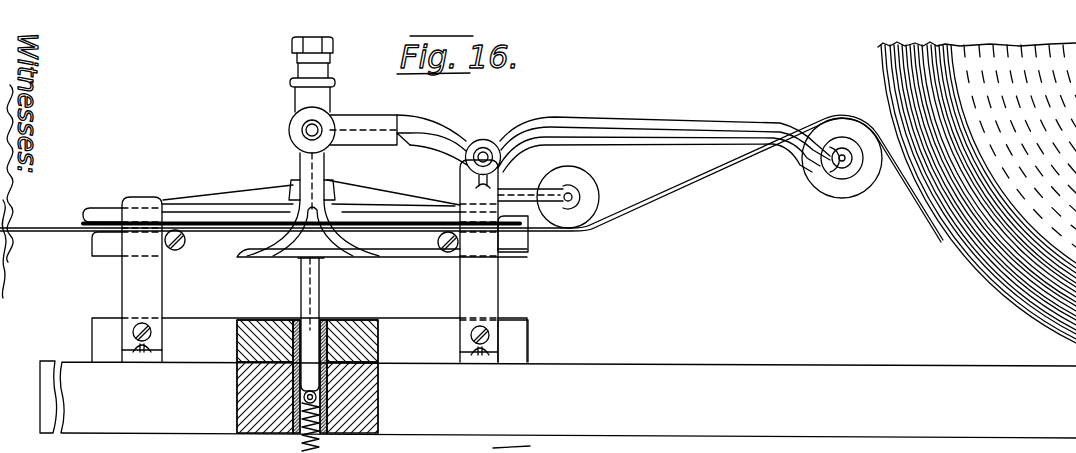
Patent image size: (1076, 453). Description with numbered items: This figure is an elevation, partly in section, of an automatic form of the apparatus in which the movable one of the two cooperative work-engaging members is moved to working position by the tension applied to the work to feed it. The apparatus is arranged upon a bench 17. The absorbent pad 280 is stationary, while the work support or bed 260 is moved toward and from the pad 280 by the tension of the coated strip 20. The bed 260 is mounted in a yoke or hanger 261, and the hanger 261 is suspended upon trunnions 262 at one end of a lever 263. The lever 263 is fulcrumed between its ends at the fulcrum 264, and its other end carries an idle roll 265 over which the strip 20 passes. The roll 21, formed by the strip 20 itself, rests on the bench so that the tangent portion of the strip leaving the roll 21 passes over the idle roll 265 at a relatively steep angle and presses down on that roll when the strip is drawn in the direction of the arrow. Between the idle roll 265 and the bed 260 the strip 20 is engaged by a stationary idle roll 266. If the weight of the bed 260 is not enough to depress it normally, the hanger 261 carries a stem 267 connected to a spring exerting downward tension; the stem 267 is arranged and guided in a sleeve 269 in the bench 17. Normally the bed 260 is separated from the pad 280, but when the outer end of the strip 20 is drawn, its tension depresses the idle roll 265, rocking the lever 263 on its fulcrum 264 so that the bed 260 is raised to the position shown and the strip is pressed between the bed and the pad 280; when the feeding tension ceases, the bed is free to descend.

The bench 17 is at (741, 362).
The strip 20 is at (648, 216).
The roll 21 is at (878, 66).
The bed 260 is at (527, 257).
The hanger 261 is at (323, 165).
The trunnions 262 is at (290, 127).
The lever 263 is at (415, 107).
The fulcrum 264 is at (482, 139).
The idle roll 265 is at (841, 200).
The stationary idle roll 266 is at (592, 183).
The stem 267 is at (313, 292).
The sleeve 269 is at (330, 397).
The absorbent pad 280 is at (197, 222).